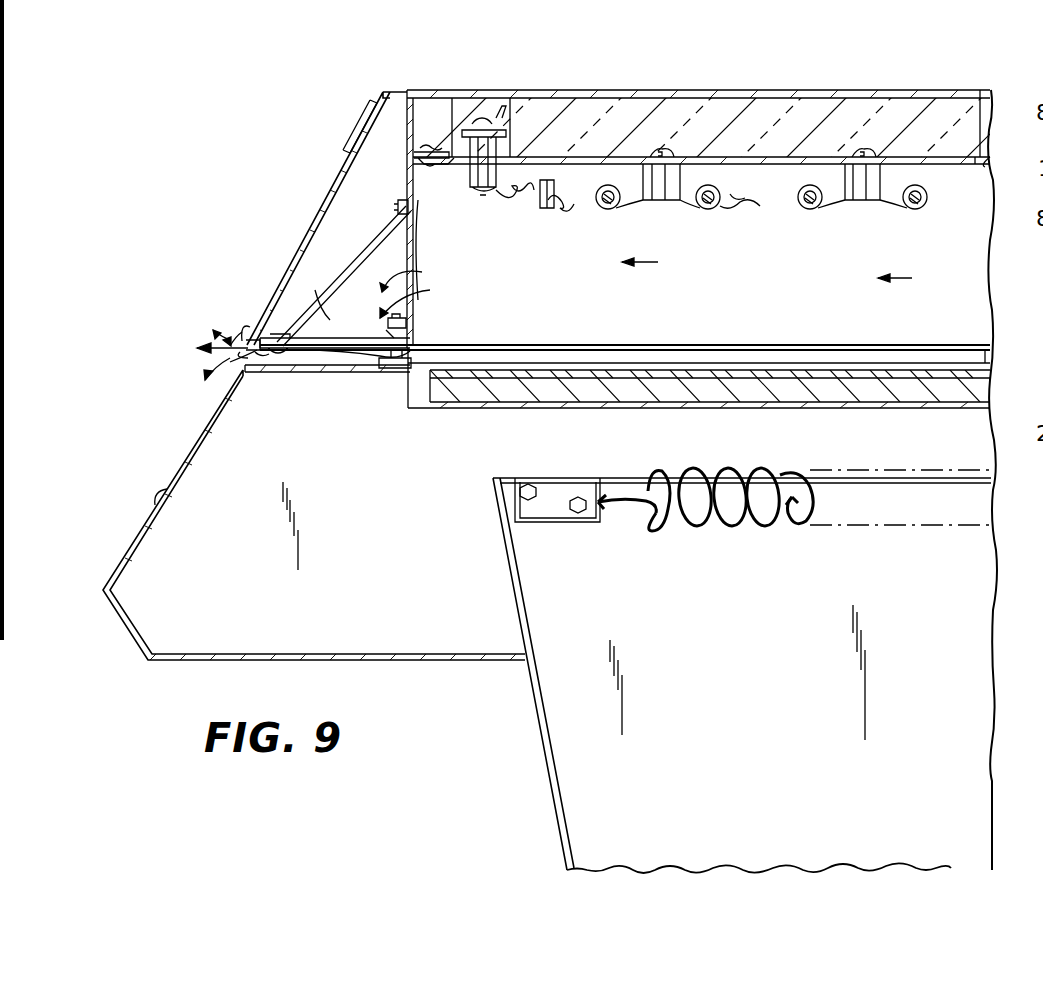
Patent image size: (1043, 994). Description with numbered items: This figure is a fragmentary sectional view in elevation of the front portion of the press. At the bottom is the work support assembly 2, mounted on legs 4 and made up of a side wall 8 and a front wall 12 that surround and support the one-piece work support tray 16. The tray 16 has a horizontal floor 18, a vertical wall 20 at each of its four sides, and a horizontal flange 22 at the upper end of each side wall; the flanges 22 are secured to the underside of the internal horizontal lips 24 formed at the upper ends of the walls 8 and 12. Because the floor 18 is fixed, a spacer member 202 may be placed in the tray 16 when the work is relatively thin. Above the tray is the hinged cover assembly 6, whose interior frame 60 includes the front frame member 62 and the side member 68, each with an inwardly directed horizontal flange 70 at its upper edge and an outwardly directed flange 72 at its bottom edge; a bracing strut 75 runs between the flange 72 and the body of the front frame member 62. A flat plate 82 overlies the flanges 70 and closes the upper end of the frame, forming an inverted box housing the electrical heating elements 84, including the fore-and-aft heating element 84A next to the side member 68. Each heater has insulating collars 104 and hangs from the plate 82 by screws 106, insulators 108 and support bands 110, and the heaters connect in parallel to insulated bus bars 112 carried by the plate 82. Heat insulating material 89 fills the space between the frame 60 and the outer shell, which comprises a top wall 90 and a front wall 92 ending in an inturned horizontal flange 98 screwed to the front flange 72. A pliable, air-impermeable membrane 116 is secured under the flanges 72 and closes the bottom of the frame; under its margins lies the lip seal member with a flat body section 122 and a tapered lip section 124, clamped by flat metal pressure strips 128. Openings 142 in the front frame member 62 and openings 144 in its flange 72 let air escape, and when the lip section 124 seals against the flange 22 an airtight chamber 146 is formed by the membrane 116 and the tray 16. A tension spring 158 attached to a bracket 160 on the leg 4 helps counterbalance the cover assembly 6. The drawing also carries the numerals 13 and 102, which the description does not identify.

The work support assembly 2 is at (188, 444).
The legs 4 is at (535, 735).
The hinged cover assembly 6 is at (290, 276).
The side wall 8 is at (193, 505).
The front wall 12 is at (175, 460).
The cabinet top wall 13 is at (992, 365).
The work support tray 16 is at (460, 412).
The horizontal floor 18 is at (486, 408).
The vertical wall 20 is at (410, 381).
The horizontal flange 22 is at (276, 374).
The internal horizontal lips 24 is at (235, 390).
The interior frame 60 is at (400, 188).
The front frame member 62 is at (417, 238).
The side member 68 is at (775, 305).
The inwardly directed horizontal flange 70 is at (413, 175).
The outwardly directed flange 72 is at (300, 336).
The bracing strut 75 is at (388, 252).
The flat plate 82 is at (984, 165).
The electrical heating elements 84 is at (691, 216).
The heating element 84A is at (546, 214).
The heat insulating material 89 is at (880, 105).
The top wall 90 is at (745, 90).
The front wall 92 is at (313, 238).
The inturned horizontal flange 98 is at (258, 340).
The pad 102 is at (748, 210).
The insulating collars 104 is at (752, 198).
The screws 106 is at (660, 148).
The insulators 108 is at (880, 200).
The support bands 110 is at (670, 201).
The insulated bus bars 112 is at (492, 123).
The membrane 116 is at (673, 345).
The flat body section 122 is at (444, 345).
The tapered lip section 124 is at (372, 371).
The flat metal pressure strips 128 is at (396, 363).
The openings 142 is at (415, 268).
The openings 144 is at (413, 320).
The airtight chamber 146 is at (735, 357).
The tension spring 158 is at (692, 525).
The brackets 160 is at (556, 525).
The spacer member 202 is at (985, 392).